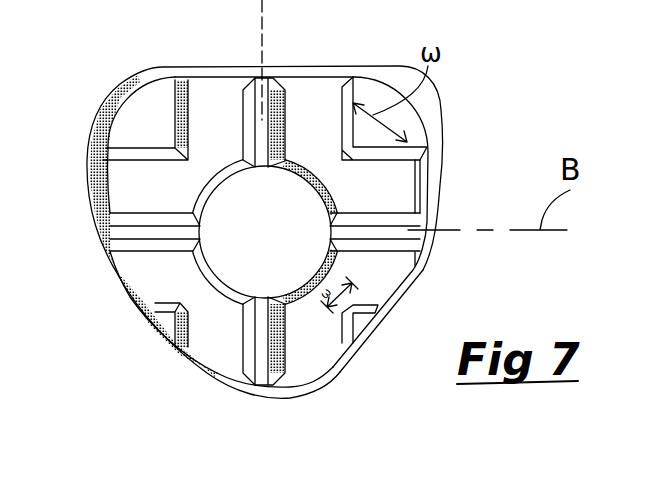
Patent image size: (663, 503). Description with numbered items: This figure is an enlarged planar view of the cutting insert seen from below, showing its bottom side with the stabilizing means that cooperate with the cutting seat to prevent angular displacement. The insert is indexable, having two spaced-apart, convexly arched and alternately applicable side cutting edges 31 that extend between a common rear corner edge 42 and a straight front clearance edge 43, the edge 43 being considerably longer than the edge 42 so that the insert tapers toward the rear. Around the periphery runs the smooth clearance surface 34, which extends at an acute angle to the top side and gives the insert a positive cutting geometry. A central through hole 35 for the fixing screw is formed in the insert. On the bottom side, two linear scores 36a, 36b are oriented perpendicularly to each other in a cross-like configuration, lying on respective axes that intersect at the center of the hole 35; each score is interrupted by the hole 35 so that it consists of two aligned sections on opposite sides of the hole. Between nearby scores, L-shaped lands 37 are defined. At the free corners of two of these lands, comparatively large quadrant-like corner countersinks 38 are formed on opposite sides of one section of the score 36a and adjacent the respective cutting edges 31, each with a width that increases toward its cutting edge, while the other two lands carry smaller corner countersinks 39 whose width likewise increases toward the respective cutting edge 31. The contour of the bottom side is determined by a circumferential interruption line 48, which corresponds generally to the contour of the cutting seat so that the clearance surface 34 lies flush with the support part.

The side cutting edge 31 is at (86, 199).
The peripheral clearance surface 34 is at (123, 300).
The through hole 35 is at (240, 213).
The linear score 36a is at (293, 117).
The linear score 36b is at (158, 263).
The L-shaped land 37 is at (328, 428).
The corner countersink 38 is at (130, 123).
The corner countersink 39 is at (168, 330).
The rear corner edge 42 is at (253, 390).
The front clearance edge 43 is at (214, 67).
The interruption line 48 is at (392, 270).